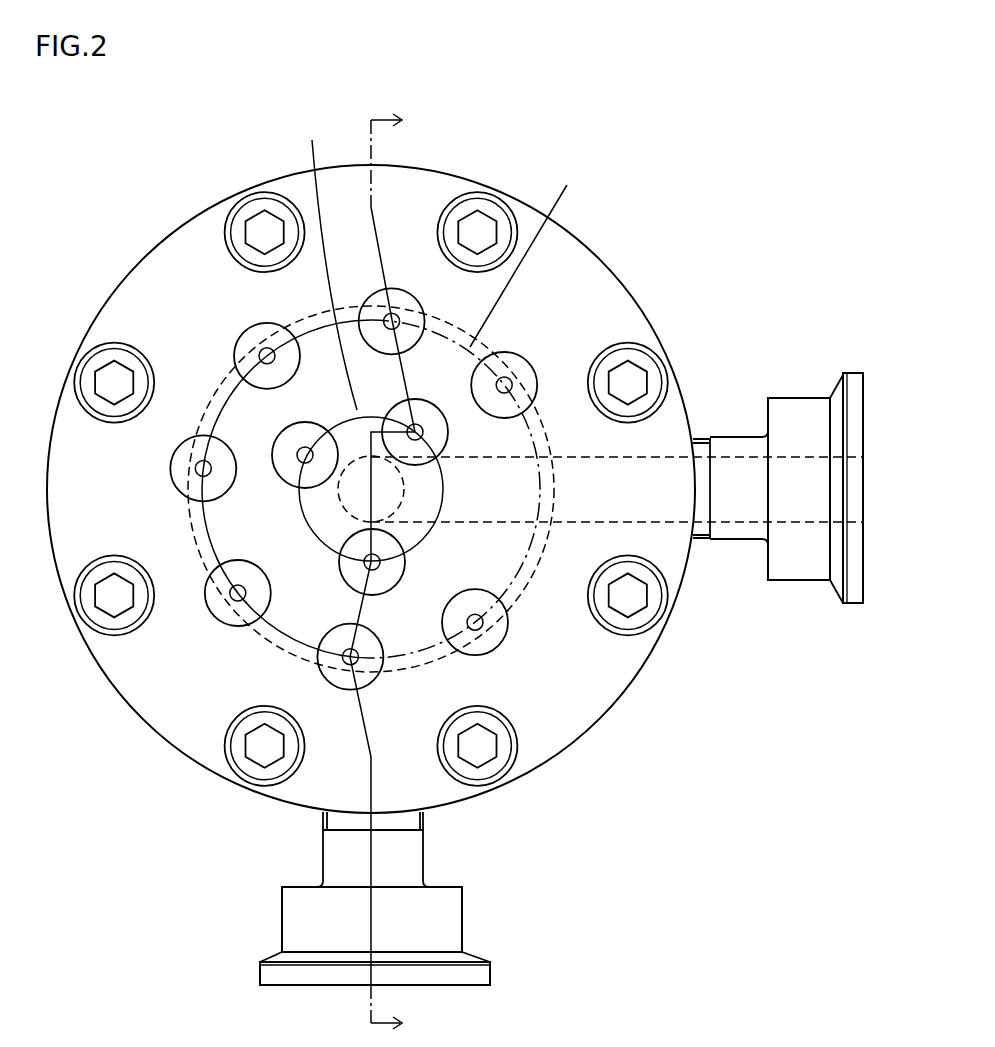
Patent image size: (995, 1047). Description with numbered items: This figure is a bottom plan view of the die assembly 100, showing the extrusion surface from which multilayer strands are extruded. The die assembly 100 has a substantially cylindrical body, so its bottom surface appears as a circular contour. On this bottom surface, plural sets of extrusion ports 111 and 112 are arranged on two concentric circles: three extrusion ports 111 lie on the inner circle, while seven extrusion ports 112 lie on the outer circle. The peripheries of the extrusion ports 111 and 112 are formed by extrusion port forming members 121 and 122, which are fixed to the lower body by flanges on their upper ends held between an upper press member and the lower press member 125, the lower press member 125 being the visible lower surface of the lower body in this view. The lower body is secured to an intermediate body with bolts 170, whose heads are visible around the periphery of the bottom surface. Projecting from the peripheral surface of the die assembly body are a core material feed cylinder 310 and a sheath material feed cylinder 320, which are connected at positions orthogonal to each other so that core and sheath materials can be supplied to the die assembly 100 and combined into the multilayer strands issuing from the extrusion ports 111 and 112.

The die assembly 100 is at (597, 800).
The extrusion port 111 is at (353, 583).
The extrusion port 112 is at (497, 657).
The extrusion port forming member 121 is at (357, 657).
The extrusion port forming member 122 is at (480, 627).
The lower press member 125 is at (617, 663).
The bolt 170 is at (495, 208).
The core material feed cylinder 310 is at (453, 920).
The sheath material feed cylinder 320 is at (801, 413).